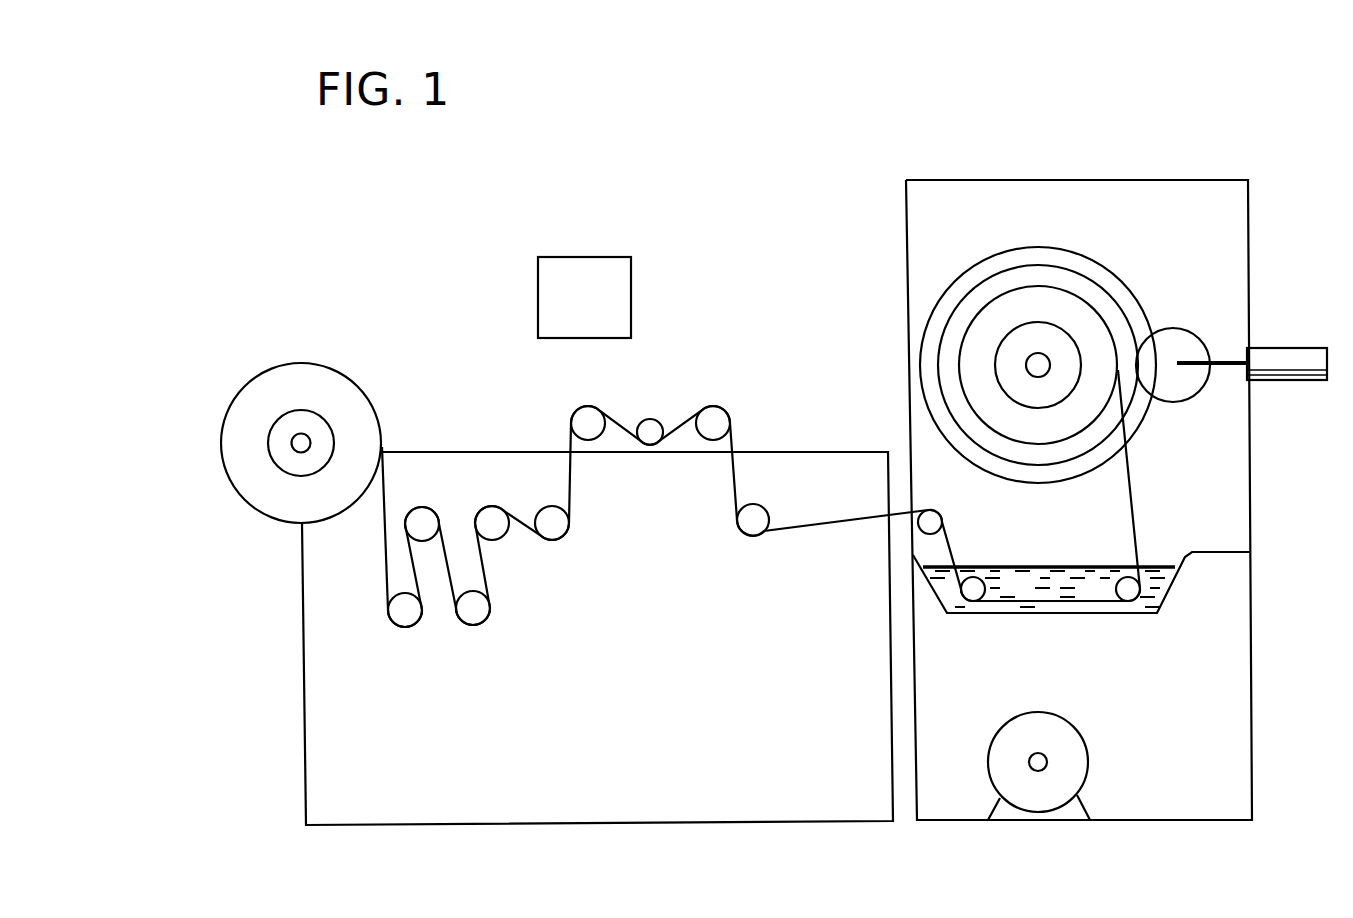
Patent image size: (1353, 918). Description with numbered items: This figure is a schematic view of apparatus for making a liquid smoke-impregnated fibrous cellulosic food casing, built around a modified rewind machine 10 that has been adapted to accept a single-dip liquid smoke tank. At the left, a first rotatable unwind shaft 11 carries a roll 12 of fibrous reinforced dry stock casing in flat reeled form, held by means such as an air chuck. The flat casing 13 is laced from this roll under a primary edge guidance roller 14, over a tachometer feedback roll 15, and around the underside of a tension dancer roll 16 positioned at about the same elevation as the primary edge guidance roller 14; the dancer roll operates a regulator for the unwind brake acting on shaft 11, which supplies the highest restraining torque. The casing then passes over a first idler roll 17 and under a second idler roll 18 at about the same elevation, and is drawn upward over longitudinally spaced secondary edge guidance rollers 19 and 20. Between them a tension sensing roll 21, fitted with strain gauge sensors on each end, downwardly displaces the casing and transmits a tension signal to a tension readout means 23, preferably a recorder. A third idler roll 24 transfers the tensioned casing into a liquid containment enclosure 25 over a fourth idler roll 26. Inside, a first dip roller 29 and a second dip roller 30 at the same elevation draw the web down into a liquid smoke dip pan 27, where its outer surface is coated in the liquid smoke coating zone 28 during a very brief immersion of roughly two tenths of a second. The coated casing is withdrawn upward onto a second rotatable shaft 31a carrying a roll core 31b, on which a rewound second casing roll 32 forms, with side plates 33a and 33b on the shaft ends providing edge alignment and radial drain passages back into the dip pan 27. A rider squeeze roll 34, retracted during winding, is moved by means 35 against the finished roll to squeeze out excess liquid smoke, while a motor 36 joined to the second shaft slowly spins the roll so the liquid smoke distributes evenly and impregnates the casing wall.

The modified rewind machine 10 is at (598, 712).
The first rotatable unwind shaft 11 is at (297, 440).
The roll of fibrous reinforced dry stock cellulose food casing 12 is at (344, 385).
The flat casing 13 is at (388, 493).
The primary edge guidance roller 14 is at (405, 613).
The tachometer feedback roll 15 is at (427, 515).
The tension dancer roll 16 is at (482, 612).
The first idler roll 17 is at (503, 518).
The second idler roll 18 is at (562, 527).
The secondary edge guidance roller 19 is at (570, 423).
The secondary edge guidance roller 20 is at (731, 422).
The tension sensing roll 21 is at (643, 428).
The tension readout means 23 is at (631, 315).
The third idler roll 24 is at (760, 513).
The liquid containment enclosure 25 is at (1137, 179).
The fourth idler roll 26 is at (942, 513).
The liquid smoke dip pan 27 is at (1022, 613).
The liquid smoke coating zone 28 is at (1077, 592).
The first dip roller 29 is at (977, 598).
The second dip roller 30 is at (1130, 598).
The second rotatable shaft 31a is at (1047, 360).
The roll core 31b is at (1080, 343).
The second casing roll 32 is at (967, 363).
The side plate 33a is at (987, 300).
The side plate 33b is at (1030, 247).
The rider squeeze roll 34 is at (1183, 330).
The means for moving rider squeeze roll 35 is at (1277, 357).
The motor 36 is at (1067, 733).